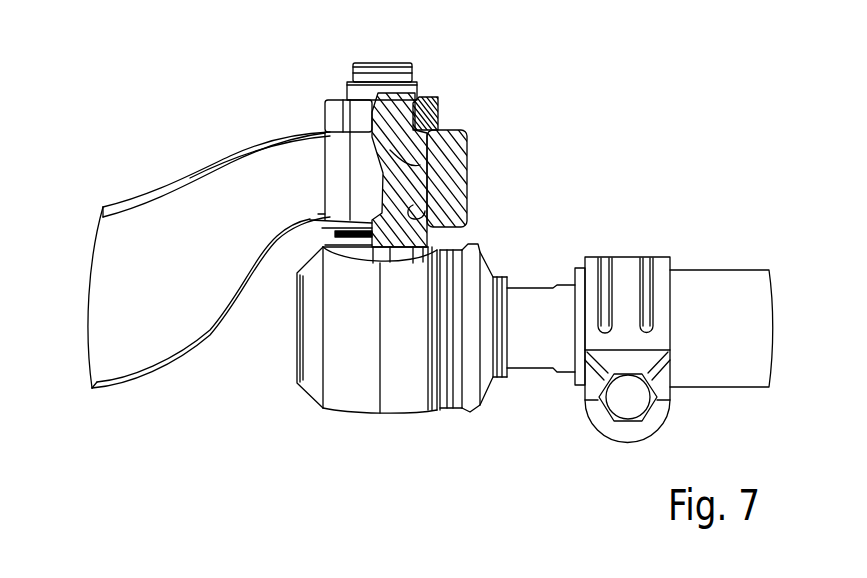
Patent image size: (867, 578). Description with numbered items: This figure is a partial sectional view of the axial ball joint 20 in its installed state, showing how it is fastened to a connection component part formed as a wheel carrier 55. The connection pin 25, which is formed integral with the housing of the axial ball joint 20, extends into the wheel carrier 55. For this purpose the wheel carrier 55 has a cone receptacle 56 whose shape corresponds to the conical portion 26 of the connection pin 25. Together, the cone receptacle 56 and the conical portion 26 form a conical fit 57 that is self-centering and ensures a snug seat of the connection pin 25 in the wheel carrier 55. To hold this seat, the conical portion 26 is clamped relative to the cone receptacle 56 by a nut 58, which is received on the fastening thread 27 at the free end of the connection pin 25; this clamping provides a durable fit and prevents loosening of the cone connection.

The axial ball joint 20 is at (306, 414).
The connection pin 25 is at (397, 153).
The conical portion 26 is at (418, 160).
The fastening thread 27 is at (425, 97).
The wheel carrier 55 is at (137, 186).
The cone receptacle 56 is at (415, 212).
The conical fit 57 is at (428, 184).
The nut 58 is at (337, 113).